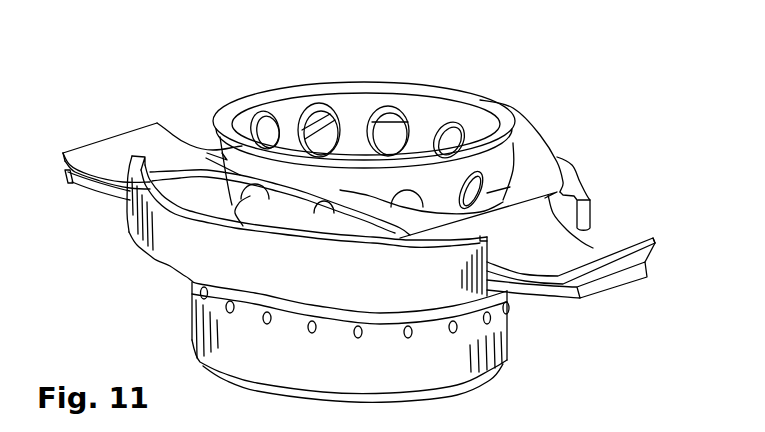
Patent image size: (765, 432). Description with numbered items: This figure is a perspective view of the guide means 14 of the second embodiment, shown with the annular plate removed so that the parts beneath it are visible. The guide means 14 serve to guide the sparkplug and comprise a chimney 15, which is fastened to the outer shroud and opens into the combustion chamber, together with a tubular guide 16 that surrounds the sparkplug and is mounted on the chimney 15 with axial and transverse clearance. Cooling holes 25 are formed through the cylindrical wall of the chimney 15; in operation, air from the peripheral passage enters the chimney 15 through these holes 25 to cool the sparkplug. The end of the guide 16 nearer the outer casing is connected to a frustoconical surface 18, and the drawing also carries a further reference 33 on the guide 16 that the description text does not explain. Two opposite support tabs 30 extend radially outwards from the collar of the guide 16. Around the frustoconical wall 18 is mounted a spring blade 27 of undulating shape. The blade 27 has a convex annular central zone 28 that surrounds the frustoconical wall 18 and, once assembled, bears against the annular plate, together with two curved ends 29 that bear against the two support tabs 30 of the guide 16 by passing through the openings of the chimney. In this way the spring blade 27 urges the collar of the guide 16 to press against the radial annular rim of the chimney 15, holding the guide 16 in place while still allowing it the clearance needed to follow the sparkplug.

The guide means 14 is at (613, 72).
The chimney 15 is at (233, 356).
The guide 16 is at (310, 72).
The frustoconical surface 18 is at (380, 98).
The cooling holes 25 is at (507, 310).
The spring blade 27 is at (505, 103).
The convex annular central zone 28 is at (533, 155).
The curved ends 29 is at (119, 152).
The support tabs 30 is at (85, 182).
The slot 33 is at (267, 127).